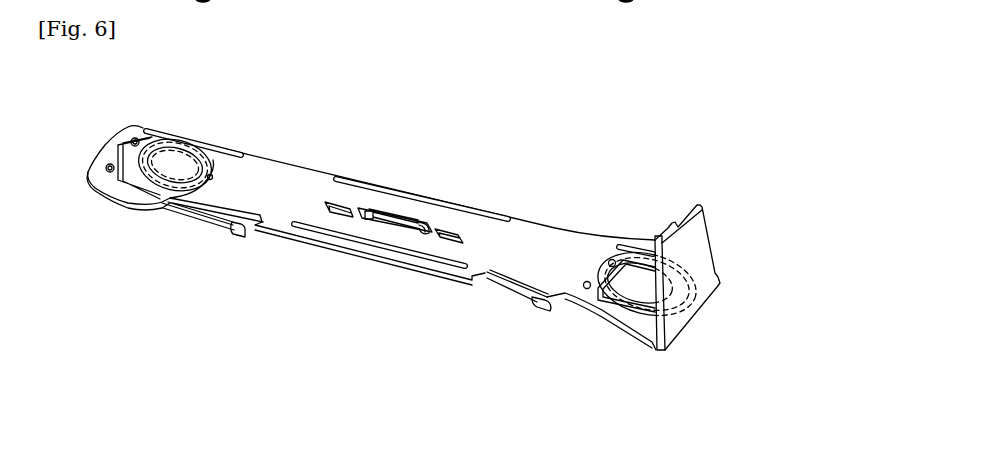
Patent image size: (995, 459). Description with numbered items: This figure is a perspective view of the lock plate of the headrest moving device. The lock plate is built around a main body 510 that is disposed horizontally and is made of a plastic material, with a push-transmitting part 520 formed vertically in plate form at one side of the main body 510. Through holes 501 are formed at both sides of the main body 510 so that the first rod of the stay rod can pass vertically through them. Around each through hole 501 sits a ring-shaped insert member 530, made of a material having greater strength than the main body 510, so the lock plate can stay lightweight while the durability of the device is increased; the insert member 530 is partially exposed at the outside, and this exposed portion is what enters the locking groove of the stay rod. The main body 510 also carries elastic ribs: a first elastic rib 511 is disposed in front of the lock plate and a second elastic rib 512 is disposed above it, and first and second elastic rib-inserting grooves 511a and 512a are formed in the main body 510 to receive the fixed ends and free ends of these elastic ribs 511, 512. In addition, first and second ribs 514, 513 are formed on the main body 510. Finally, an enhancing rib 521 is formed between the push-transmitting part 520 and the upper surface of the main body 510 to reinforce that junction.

The through hole 501 is at (166, 172).
The main body 510 is at (541, 263).
The first elastic rib 511 is at (213, 221).
The first elastic rib-inserting groove 511a is at (238, 234).
The second elastic rib 512 is at (421, 240).
The second elastic rib-inserting groove 512a is at (409, 233).
The second rib 513 is at (447, 207).
The first rib 514 is at (205, 137).
The push-transmitting part 520 is at (693, 253).
The enhancing rib 521 is at (656, 238).
The insert member 530 is at (177, 198).